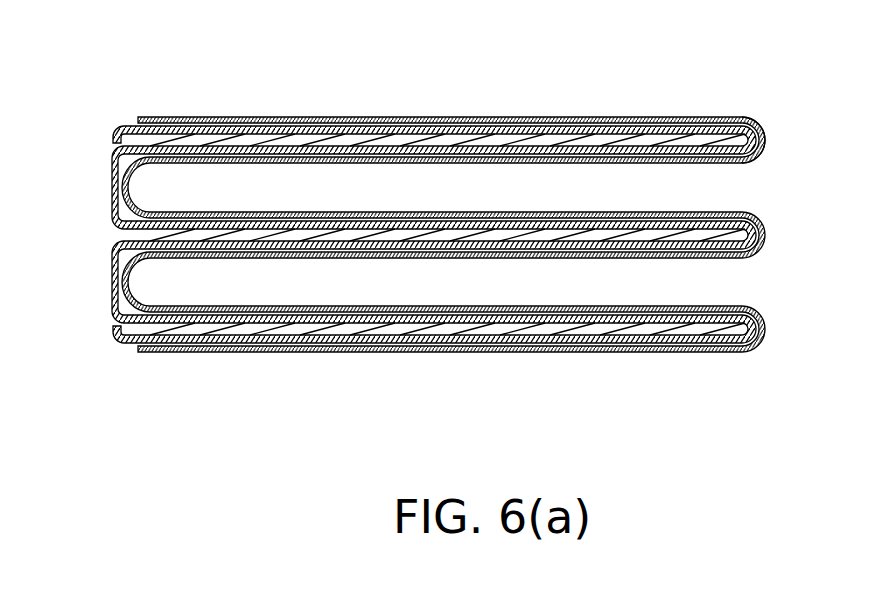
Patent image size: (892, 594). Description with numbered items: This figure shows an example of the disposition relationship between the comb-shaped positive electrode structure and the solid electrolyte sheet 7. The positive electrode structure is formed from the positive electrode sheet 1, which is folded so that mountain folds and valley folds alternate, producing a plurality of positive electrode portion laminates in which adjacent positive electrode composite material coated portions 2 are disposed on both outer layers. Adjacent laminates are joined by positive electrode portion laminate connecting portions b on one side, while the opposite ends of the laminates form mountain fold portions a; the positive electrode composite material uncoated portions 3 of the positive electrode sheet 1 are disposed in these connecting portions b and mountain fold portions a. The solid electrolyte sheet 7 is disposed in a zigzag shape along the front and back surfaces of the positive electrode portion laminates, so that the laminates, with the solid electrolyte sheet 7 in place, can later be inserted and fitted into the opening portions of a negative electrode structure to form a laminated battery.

The positive electrode sheet 1 is at (436, 180).
The positive electrode composite material coated portion 2 is at (247, 110).
The positive electrode composite material uncoated portion 3 is at (750, 109).
The solid electrolyte sheet 7 is at (185, 106).
The mountain fold portion a is at (778, 234).
The positive electrode portion laminate connecting portion b is at (92, 235).